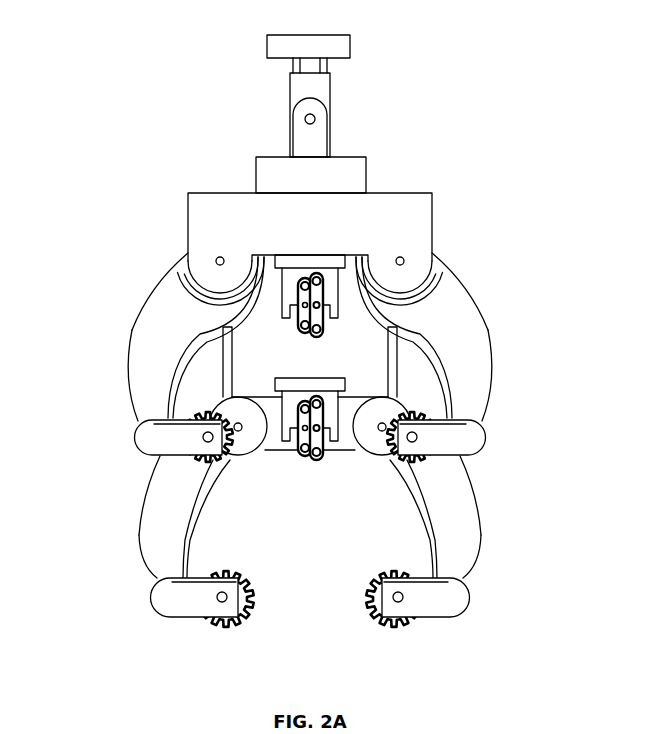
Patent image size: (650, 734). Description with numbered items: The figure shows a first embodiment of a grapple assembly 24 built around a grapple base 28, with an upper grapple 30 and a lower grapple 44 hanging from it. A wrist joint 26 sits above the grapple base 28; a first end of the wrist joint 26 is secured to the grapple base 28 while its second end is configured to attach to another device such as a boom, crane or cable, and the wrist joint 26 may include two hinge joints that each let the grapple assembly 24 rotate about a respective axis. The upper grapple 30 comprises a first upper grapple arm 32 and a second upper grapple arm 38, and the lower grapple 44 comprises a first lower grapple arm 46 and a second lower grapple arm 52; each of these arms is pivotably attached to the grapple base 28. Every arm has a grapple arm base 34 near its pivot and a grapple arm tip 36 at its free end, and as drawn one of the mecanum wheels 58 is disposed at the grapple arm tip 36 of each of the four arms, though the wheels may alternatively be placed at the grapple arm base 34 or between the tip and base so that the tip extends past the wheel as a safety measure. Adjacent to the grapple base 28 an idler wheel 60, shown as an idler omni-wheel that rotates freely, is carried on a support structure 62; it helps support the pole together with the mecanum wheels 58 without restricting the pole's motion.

The grapple assembly 24 is at (176, 44).
The wrist joint 26 is at (340, 100).
The grapple base 28 is at (431, 221).
The upper grapple 30 is at (93, 329).
The first upper grapple arm 32 is at (137, 318).
The grapple arm base 34 is at (172, 282).
The grapple arm tip 36 is at (135, 391).
The second upper grapple arm 38 is at (483, 318).
The lower grapple 44 is at (122, 512).
The first lower grapple arm 46 is at (147, 488).
The second lower grapple arm 52 is at (478, 496).
The mecanum wheel 58 is at (226, 462).
The idler wheel 60 is at (297, 326).
The support structure 62 is at (142, 431).